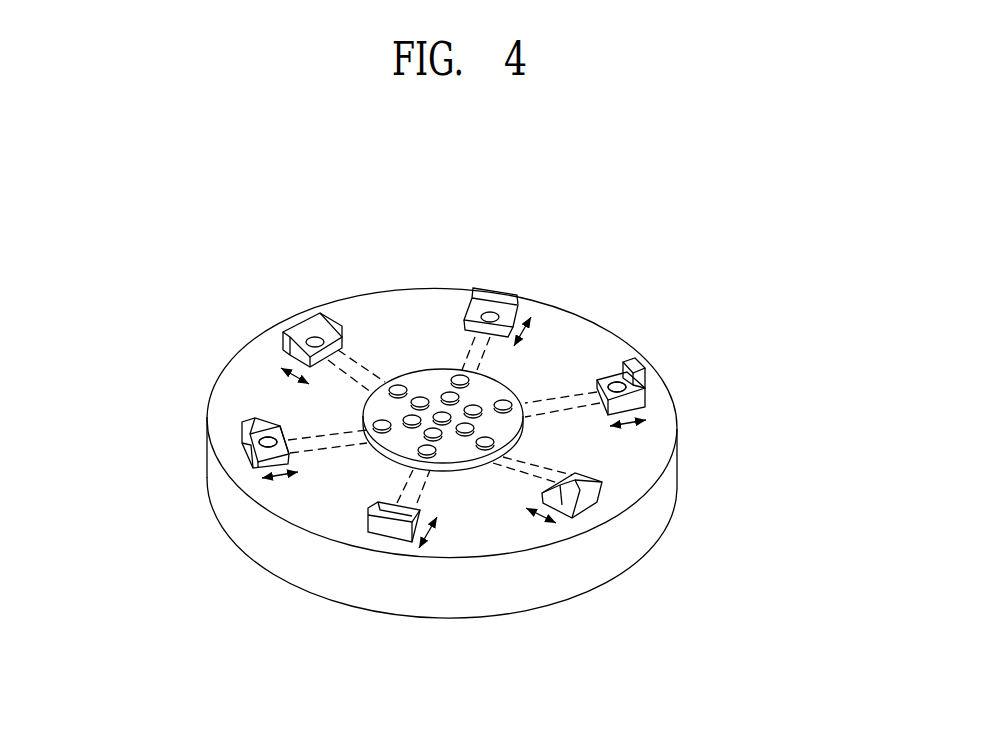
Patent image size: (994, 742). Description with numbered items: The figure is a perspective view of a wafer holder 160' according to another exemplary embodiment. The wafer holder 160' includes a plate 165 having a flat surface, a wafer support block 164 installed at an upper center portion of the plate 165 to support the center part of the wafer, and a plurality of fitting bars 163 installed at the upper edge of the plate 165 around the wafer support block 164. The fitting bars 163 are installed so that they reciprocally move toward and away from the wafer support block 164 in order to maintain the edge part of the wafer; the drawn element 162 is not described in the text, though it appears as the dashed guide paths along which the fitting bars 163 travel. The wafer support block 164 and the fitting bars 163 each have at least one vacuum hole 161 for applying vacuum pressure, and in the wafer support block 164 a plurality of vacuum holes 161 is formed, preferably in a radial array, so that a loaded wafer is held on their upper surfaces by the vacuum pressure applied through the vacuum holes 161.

The wafer holder 160' is at (491, 520).
The vacuum hole 161 is at (502, 402).
The guide rails 162 is at (363, 368).
The fitting bar 163 is at (262, 426).
The wafer support block 164 is at (455, 447).
The plate 165 is at (323, 512).